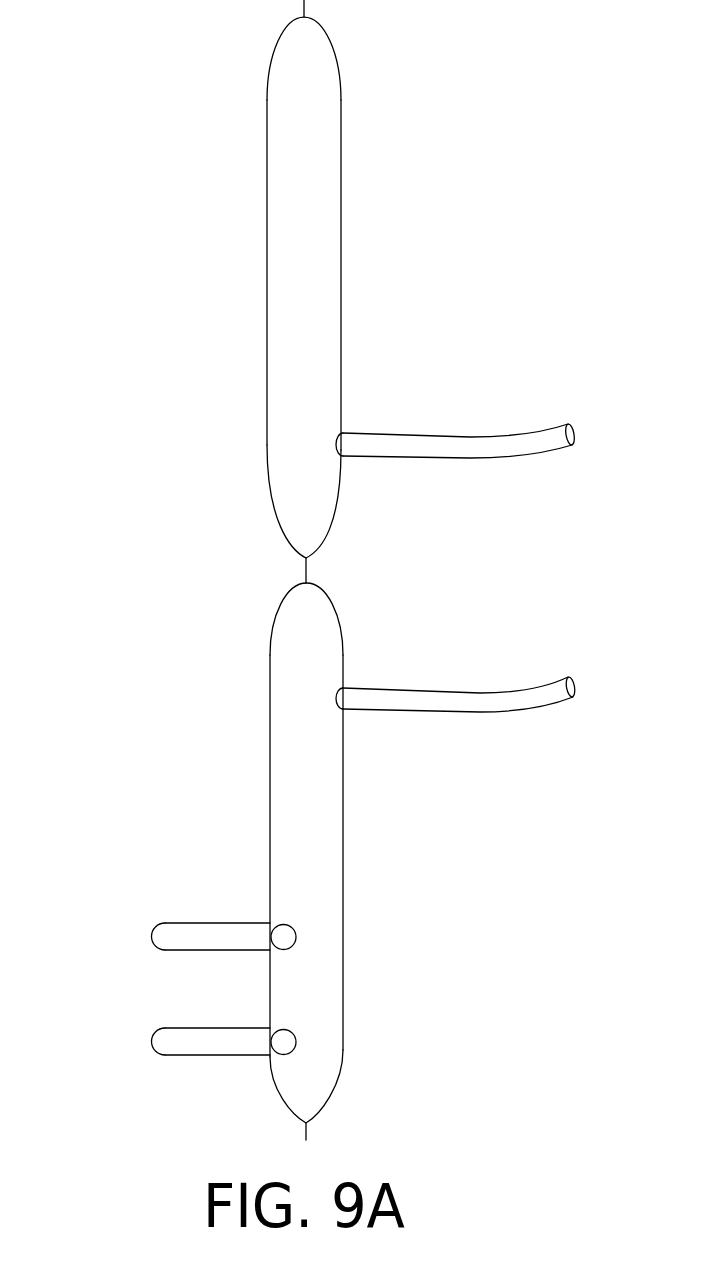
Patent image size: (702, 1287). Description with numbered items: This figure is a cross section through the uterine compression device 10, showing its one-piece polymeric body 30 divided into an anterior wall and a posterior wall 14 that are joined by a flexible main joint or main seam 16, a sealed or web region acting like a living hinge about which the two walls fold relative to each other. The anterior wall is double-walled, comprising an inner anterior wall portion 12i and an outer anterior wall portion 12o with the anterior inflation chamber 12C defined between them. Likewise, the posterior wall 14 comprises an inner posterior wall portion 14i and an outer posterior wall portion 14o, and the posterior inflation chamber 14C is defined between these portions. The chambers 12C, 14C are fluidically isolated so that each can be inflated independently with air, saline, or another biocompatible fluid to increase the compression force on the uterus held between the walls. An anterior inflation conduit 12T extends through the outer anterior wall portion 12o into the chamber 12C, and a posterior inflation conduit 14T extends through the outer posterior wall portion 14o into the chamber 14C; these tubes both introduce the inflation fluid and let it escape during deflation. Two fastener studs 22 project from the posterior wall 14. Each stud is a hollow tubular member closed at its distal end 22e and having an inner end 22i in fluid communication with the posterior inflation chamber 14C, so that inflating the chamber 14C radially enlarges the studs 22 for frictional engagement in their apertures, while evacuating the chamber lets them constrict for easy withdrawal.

The device 10 is at (228, 62).
The body 30 is at (355, 153).
The anterior inflation chamber 12C is at (291, 445).
The inner anterior wall portion 12i is at (267, 322).
The outer anterior wall portion 12o is at (342, 323).
The anterior inflation conduit 12T is at (488, 448).
The main joint or main seam 16 is at (308, 570).
The posterior wall 14 is at (360, 980).
The posterior inflation chamber 14C is at (291, 895).
The inner posterior wall portion 14i is at (269, 773).
The outer posterior wall portion 14o is at (345, 1063).
The posterior inflation conduit 14T is at (488, 700).
The fastener stud 22 is at (174, 922).
The distal end 22e is at (152, 935).
The inner end 22i is at (285, 940).